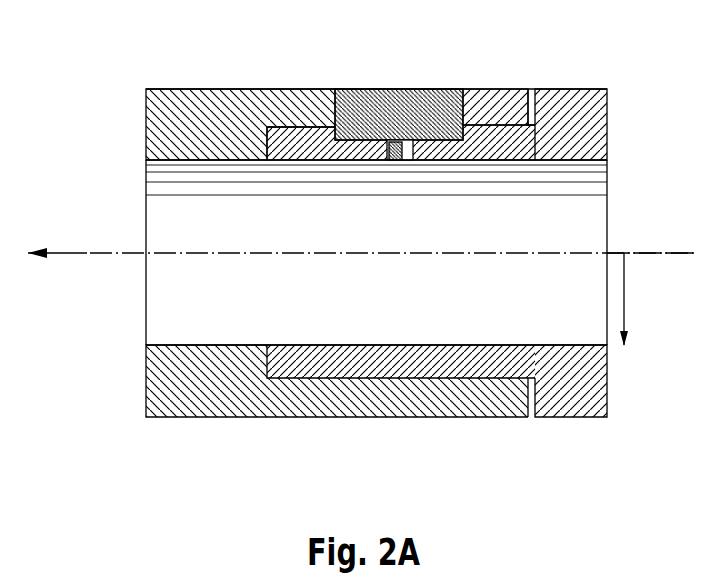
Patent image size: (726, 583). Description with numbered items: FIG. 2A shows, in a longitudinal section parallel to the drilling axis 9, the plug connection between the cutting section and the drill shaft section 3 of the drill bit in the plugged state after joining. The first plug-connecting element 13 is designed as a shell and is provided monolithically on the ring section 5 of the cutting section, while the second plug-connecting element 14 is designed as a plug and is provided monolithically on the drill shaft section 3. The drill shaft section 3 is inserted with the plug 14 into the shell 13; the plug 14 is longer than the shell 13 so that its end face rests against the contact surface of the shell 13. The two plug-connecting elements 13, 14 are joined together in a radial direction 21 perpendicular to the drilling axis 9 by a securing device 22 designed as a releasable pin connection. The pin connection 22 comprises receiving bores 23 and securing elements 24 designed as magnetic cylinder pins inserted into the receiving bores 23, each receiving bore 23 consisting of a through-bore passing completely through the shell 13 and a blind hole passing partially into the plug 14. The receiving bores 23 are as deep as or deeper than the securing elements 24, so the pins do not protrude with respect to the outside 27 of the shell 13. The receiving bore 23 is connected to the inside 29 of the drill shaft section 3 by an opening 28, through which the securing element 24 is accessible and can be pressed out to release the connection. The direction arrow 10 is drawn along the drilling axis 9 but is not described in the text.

The drill shaft section 3 is at (567, 115).
The ring section 5 is at (183, 113).
The drilling axis 9 is at (653, 250).
The flow direction 10 is at (58, 253).
The first plug-connecting element 13 is at (497, 106).
The second plug-connecting element 14 is at (288, 147).
The radial direction 21 is at (625, 297).
The securing device 22 is at (413, 80).
The receiving bore 23 is at (350, 114).
The securing element 24 is at (450, 128).
The outside 27 is at (264, 89).
The opening 28 is at (405, 143).
The inside 29 is at (527, 165).